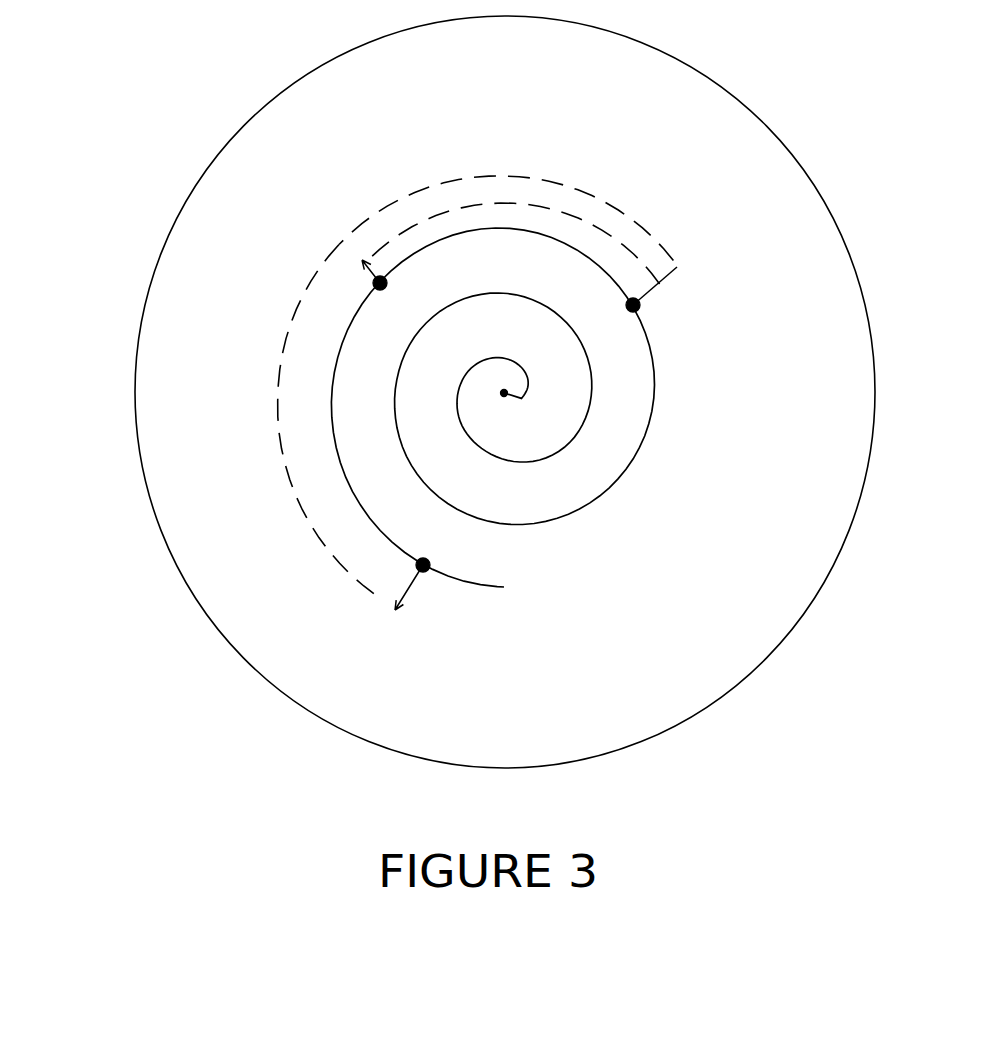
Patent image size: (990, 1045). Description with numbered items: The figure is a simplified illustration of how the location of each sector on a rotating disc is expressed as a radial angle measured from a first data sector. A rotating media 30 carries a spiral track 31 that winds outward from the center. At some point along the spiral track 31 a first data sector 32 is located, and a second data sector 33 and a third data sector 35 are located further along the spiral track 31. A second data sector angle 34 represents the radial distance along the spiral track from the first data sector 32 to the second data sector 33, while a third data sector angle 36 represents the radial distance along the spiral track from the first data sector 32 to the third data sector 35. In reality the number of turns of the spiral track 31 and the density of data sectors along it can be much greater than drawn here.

The rotating media 30 is at (835, 183).
The spiral track 31 is at (640, 490).
The first data sector 32 is at (628, 318).
The second data sector 33 is at (382, 300).
The second data sector angle 34 is at (528, 198).
The third data sector 35 is at (437, 563).
The third data sector angle 36 is at (272, 397).